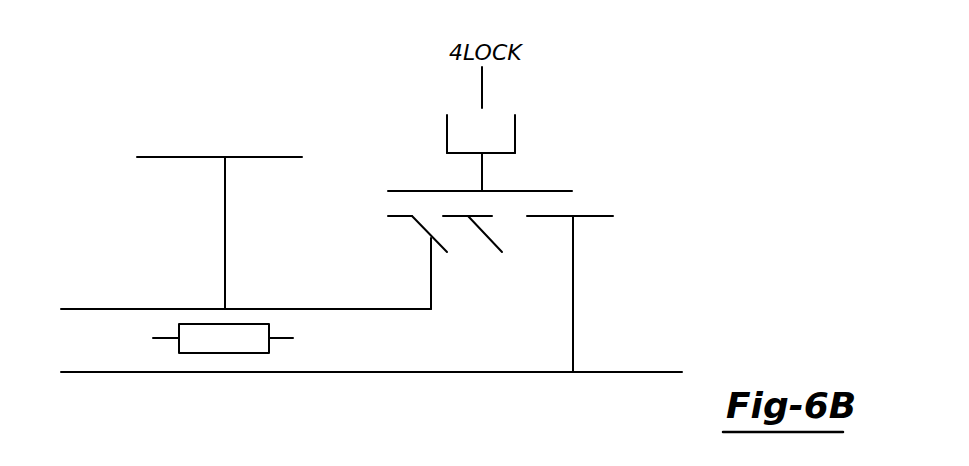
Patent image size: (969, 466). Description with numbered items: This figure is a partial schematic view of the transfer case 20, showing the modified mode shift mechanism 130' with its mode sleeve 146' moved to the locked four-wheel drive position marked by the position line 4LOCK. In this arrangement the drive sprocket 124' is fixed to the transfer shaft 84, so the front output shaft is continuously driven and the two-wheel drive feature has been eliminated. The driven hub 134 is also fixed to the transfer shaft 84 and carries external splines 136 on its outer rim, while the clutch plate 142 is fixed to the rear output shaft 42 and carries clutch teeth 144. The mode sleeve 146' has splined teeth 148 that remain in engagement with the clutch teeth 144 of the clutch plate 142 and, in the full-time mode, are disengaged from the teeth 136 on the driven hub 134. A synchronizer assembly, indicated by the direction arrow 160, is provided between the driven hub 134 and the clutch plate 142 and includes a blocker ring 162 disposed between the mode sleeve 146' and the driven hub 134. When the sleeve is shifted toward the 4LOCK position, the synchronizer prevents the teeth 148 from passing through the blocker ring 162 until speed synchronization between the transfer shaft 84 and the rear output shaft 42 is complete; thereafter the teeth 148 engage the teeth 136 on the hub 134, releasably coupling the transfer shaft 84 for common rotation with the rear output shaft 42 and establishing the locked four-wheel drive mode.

The transfer case 20 is at (88, 147).
The transfer shaft 84 is at (130, 309).
The drive sprocket 124' is at (228, 233).
The mode shift mechanism 130' is at (356, 82).
The driven hub 134 is at (431, 272).
The external splines 136 is at (395, 216).
The clutch plate 142 is at (573, 299).
The clutch teeth 144 is at (613, 216).
The mode sleeve 146' is at (534, 145).
The splined teeth 148 is at (513, 191).
The direction of movement 160 is at (506, 280).
The blocker ring 162 is at (490, 243).
The rear output shaft 42 is at (663, 372).